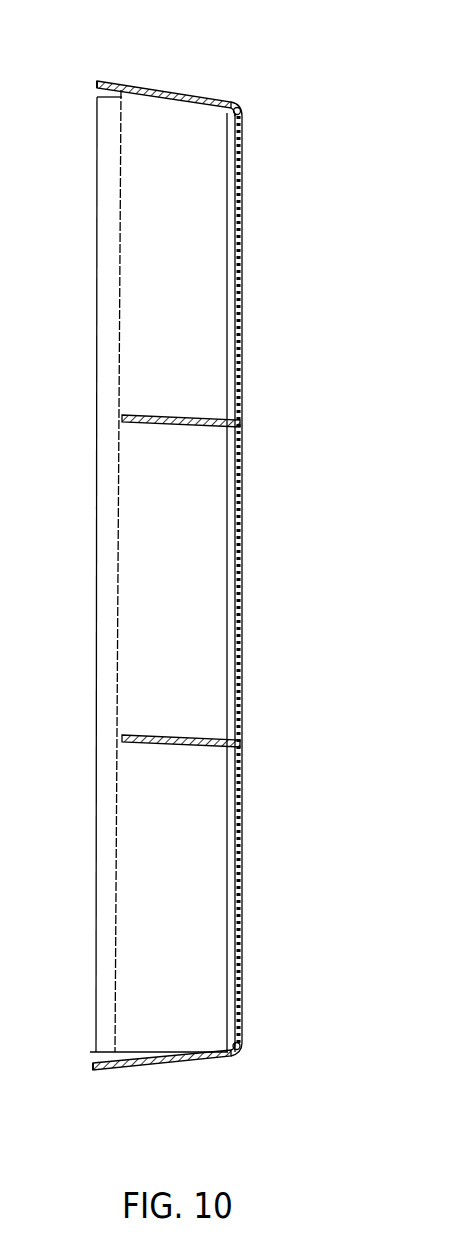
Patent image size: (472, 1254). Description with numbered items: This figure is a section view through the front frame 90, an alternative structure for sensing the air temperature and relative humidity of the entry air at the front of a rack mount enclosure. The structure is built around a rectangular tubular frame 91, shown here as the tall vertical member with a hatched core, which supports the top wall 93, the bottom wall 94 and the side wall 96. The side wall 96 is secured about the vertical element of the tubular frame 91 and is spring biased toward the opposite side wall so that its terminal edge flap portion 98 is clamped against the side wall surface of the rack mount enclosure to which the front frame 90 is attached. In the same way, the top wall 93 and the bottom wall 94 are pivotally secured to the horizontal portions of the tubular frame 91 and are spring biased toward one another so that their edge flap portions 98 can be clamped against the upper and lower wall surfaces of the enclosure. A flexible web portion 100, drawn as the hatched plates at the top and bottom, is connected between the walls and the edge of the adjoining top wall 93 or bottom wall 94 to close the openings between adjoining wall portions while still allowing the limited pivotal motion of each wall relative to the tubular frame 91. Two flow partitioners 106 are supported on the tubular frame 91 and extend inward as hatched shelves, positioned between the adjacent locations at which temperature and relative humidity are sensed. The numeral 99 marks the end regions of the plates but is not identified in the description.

The front frame 90 is at (213, 63).
The rectangular tubular frame 91 is at (230, 193).
The top wall 93 is at (215, 97).
The bottom wall 94 is at (193, 1062).
The side wall 96 is at (205, 323).
The edge flap portion 98 is at (108, 565).
The plate end caps 99 is at (107, 80).
The flexible web portion 100 is at (138, 88).
The flow partitioner 106 is at (197, 415).